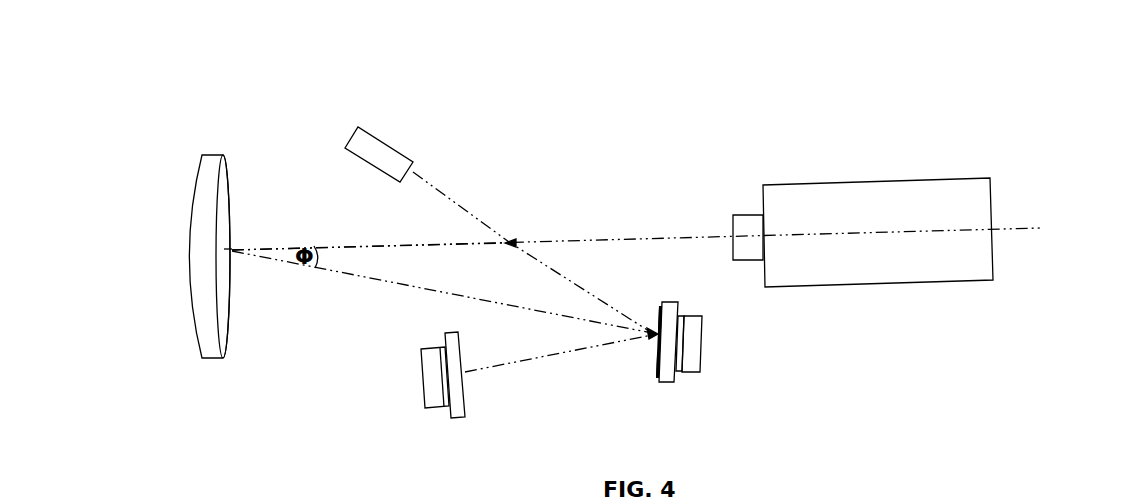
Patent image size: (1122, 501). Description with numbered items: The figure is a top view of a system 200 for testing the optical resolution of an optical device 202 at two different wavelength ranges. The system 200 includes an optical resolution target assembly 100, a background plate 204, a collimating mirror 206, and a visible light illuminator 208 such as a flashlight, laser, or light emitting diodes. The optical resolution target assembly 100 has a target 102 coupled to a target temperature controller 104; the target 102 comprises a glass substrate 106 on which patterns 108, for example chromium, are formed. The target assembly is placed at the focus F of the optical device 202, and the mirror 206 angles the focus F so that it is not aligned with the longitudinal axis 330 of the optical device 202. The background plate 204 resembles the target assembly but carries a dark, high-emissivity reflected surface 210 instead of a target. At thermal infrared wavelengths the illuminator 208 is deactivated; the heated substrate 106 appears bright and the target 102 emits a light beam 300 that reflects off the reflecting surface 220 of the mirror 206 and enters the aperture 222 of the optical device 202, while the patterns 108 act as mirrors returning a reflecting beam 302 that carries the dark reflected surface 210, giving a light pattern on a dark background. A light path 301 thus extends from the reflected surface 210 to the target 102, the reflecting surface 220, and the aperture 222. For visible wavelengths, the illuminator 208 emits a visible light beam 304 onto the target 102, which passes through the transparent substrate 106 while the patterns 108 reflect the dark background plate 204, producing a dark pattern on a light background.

The system 200 is at (232, 70).
The optical device 202 is at (867, 184).
The background plate 204 is at (467, 413).
The collimating mirror 206 is at (200, 345).
The visible light illuminator 208 is at (388, 146).
The reflected surface 210 is at (466, 405).
The reflecting surface 220 is at (230, 215).
The aperture 222 is at (744, 215).
The optical resolution target assembly 100 is at (683, 336).
The target 102 is at (660, 330).
The target temperature controller 104 is at (688, 315).
The substrate 106 is at (660, 381).
The patterns 108 is at (660, 310).
The light beam 300 is at (612, 240).
The light path 301 is at (385, 245).
The reflecting beam 302 is at (533, 362).
The visible light beam 304 is at (462, 209).
The longitudinal axis 330 is at (1015, 229).
The focus F is at (703, 336).